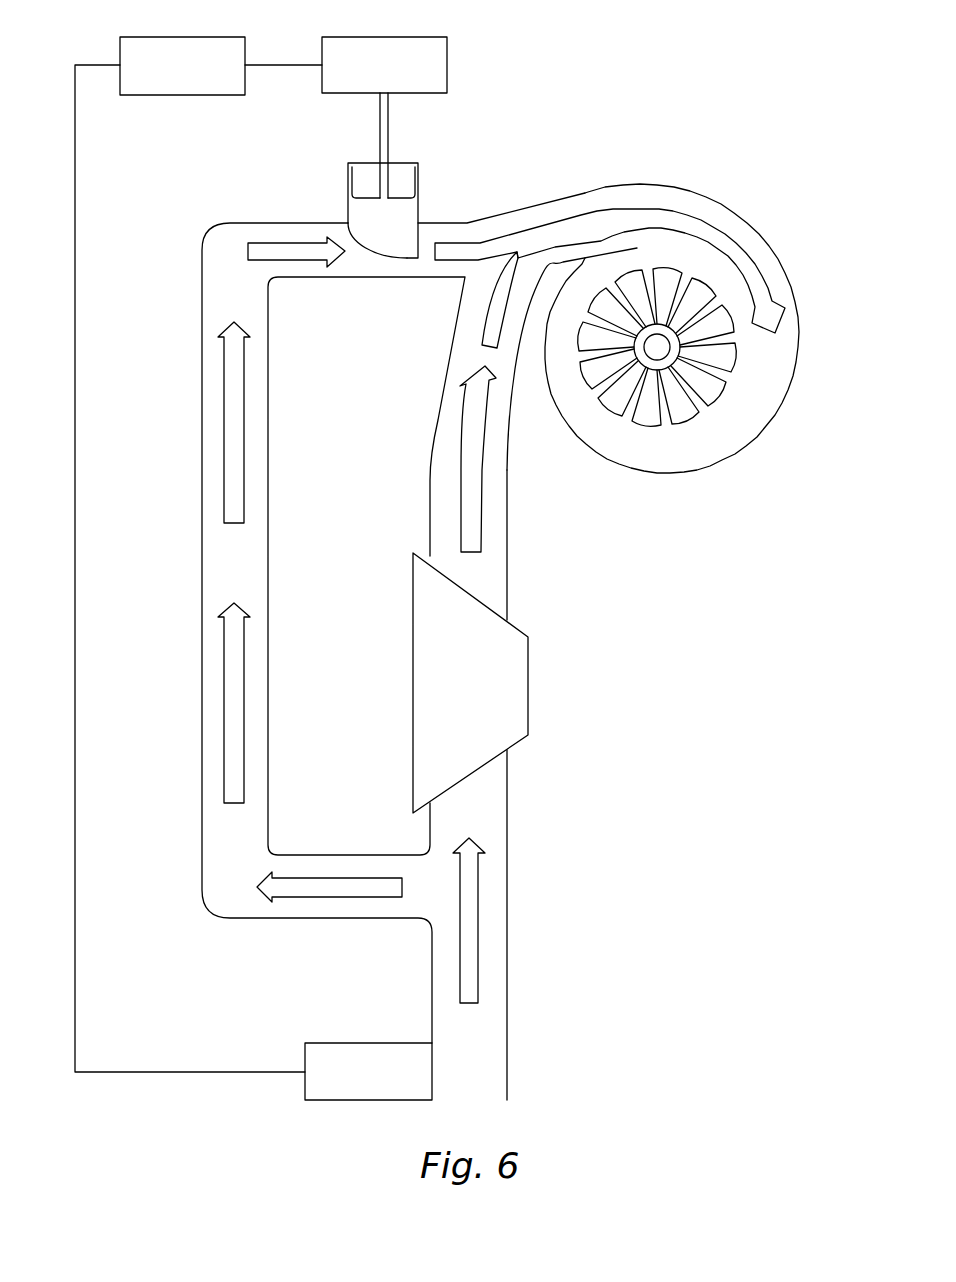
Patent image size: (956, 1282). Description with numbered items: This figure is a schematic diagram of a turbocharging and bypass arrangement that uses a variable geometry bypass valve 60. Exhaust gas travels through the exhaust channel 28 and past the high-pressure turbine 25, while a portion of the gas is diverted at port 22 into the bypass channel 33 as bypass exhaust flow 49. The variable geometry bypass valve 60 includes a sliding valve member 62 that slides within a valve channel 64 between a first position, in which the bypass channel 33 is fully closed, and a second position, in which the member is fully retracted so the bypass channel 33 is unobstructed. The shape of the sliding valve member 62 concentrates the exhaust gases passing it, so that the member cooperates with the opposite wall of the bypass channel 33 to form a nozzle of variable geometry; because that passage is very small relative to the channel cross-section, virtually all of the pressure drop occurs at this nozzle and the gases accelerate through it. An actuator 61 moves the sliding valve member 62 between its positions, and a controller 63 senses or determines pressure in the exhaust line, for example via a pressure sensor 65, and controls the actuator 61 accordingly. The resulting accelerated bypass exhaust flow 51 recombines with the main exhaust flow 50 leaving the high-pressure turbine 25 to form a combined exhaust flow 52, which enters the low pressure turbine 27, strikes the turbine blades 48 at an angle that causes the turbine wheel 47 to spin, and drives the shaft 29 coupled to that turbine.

The port 22 is at (425, 895).
The high-pressure turbine 25 is at (478, 697).
The low pressure turbine 27 is at (699, 338).
The exhaust channel 28 is at (497, 977).
The shaft 29 is at (657, 353).
The bypass channel 33 is at (212, 557).
The turbine wheel 47 is at (687, 423).
The turbine blades 48 is at (620, 413).
The bypass exhaust flow 49 is at (235, 480).
The main exhaust flow 50 is at (463, 423).
The accelerated bypass exhaust flow 51 is at (497, 243).
The combined exhaust flow 52 is at (582, 227).
The variable geometry bypass valve 60 is at (367, 174).
The actuator 61 is at (438, 62).
The sliding valve member 62 is at (367, 215).
The controller 63 is at (167, 82).
The valve channel 64 is at (400, 173).
The pressure sensor 65 is at (318, 1053).